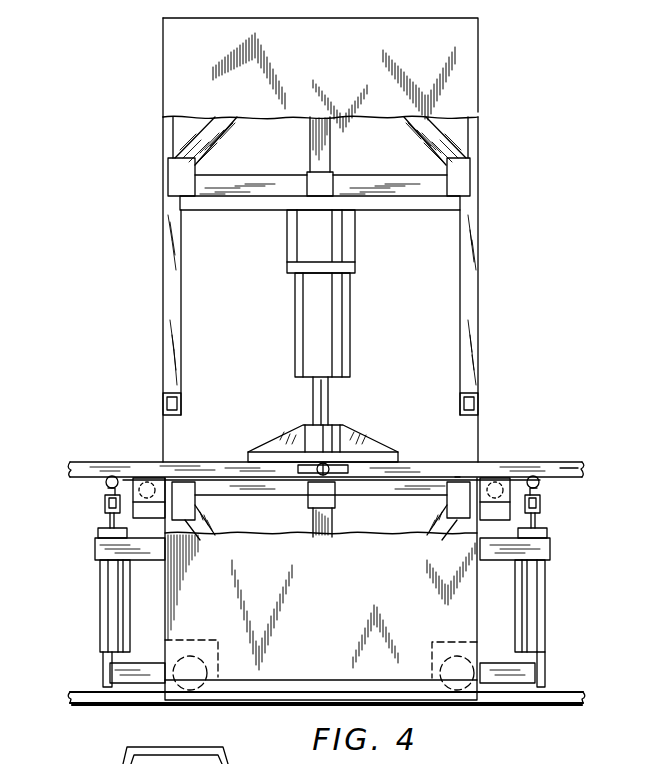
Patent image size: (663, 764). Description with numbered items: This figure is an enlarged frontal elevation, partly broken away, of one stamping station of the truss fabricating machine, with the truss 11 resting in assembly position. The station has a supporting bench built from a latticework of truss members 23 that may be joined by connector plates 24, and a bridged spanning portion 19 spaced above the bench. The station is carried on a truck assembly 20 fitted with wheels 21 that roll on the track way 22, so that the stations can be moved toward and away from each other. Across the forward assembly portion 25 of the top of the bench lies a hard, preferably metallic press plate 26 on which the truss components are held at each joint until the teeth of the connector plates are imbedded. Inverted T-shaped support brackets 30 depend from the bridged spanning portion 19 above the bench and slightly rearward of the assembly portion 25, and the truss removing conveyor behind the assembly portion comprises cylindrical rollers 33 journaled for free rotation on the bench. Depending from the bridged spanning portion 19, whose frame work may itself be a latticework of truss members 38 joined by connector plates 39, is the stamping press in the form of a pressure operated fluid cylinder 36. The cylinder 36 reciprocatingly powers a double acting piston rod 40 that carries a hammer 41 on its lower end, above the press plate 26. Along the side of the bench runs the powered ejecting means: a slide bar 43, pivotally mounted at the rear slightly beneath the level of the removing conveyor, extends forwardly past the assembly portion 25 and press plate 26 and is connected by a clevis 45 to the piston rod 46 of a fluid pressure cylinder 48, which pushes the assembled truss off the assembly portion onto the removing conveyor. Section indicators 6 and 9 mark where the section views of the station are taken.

The section line 6- 6 is at (110, 295).
The section line 9- 9 is at (242, 440).
The truss 11 is at (568, 480).
The bridged spanning portion 19 is at (480, 107).
The truck assembly 20 is at (453, 638).
The wheels 21 is at (445, 668).
The track way 22 is at (562, 697).
The truss members 23 is at (333, 527).
The connector plates 24 is at (310, 498).
The assembly portion 25 is at (457, 477).
The press plate 26 is at (403, 480).
The inverted T-shaped support brackets 30 is at (477, 267).
The cylindrical rollers 33 is at (500, 490).
The pressure operated fluid cylinder 36 is at (338, 306).
The truss members 38 is at (372, 177).
The connector plates 39 is at (462, 173).
The double acting piston rod 40 is at (329, 397).
The hammer 41 is at (358, 440).
The slide bar 43 is at (540, 488).
The clevis 45 is at (542, 508).
The piston rod 46 is at (545, 527).
The fluid pressure cylinder 48 is at (547, 593).